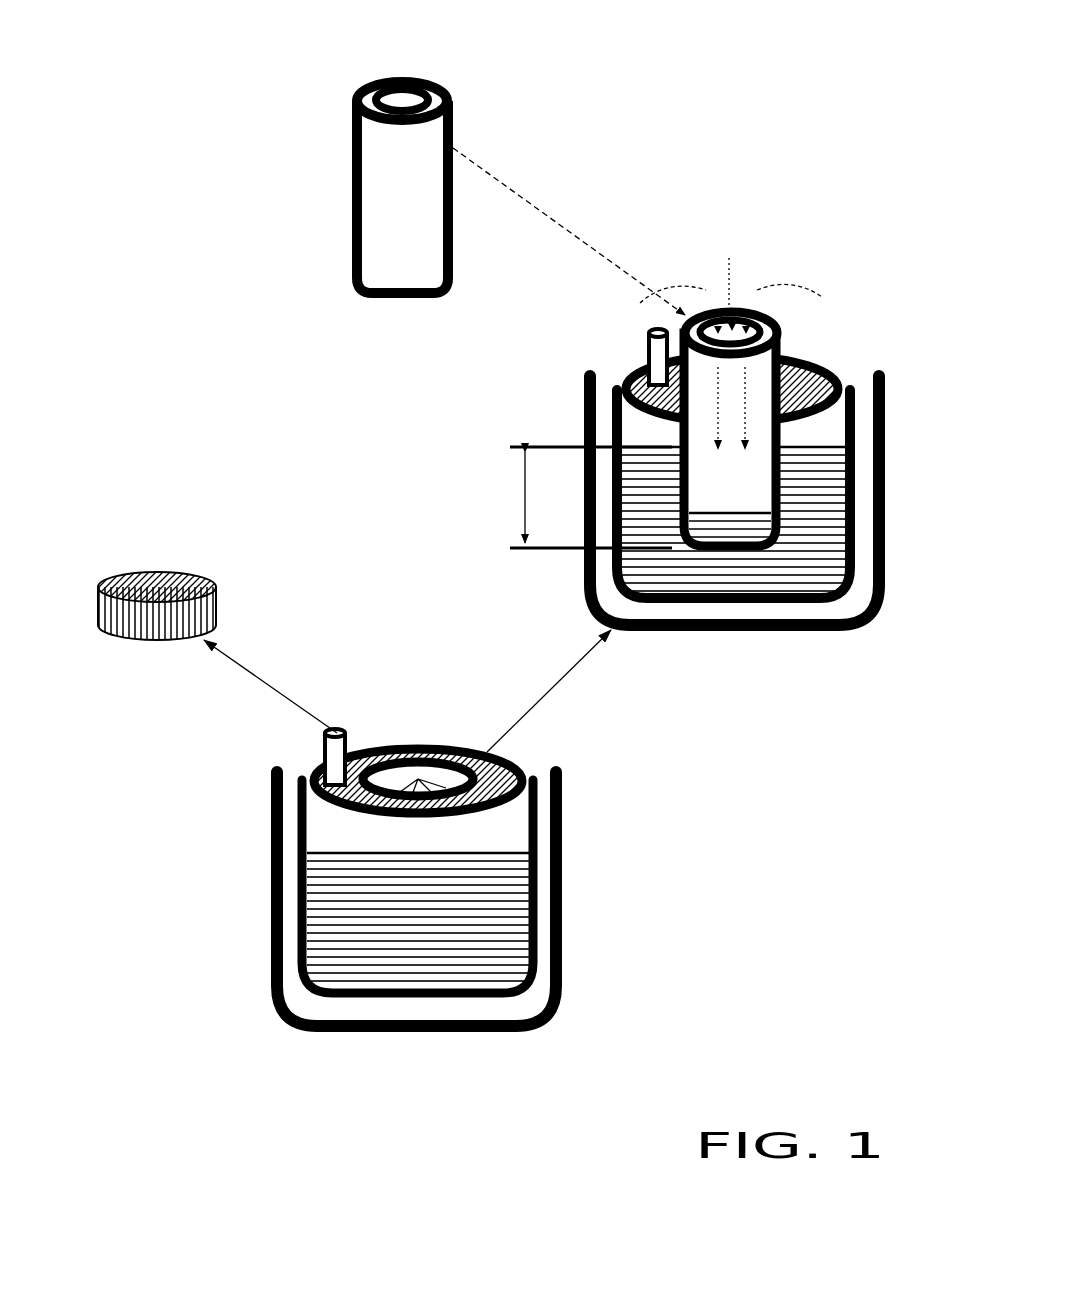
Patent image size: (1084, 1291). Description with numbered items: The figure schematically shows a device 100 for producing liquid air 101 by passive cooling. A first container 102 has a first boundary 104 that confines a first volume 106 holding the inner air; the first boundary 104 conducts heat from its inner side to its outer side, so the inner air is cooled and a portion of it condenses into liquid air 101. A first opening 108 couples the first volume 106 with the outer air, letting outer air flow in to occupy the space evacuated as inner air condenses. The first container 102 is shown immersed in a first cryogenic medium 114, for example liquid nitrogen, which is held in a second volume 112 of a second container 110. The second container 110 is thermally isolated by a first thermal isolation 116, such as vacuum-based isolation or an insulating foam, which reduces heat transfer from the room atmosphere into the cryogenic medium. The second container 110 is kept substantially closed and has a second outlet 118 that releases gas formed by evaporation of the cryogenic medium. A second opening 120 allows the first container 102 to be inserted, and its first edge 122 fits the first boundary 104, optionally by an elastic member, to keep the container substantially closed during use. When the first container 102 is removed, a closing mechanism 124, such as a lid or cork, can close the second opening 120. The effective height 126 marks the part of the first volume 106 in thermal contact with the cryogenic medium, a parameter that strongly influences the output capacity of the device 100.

The device 100 is at (654, 379).
The liquid air 101 is at (723, 535).
The first container 102 is at (330, 150).
The first boundary 104 is at (352, 180).
The first volume 106 is at (408, 205).
The first opening 108 is at (403, 100).
The second container 110 is at (415, 821).
The second volume 112 is at (323, 840).
The first cryogenic medium 114 is at (668, 565).
The first thermal isolation 116 is at (536, 985).
The second outlet 118 is at (323, 746).
The second opening 120 is at (413, 745).
The first edge 122 is at (457, 747).
The closing mechanism 124 is at (157, 573).
The effective height 126 is at (525, 510).